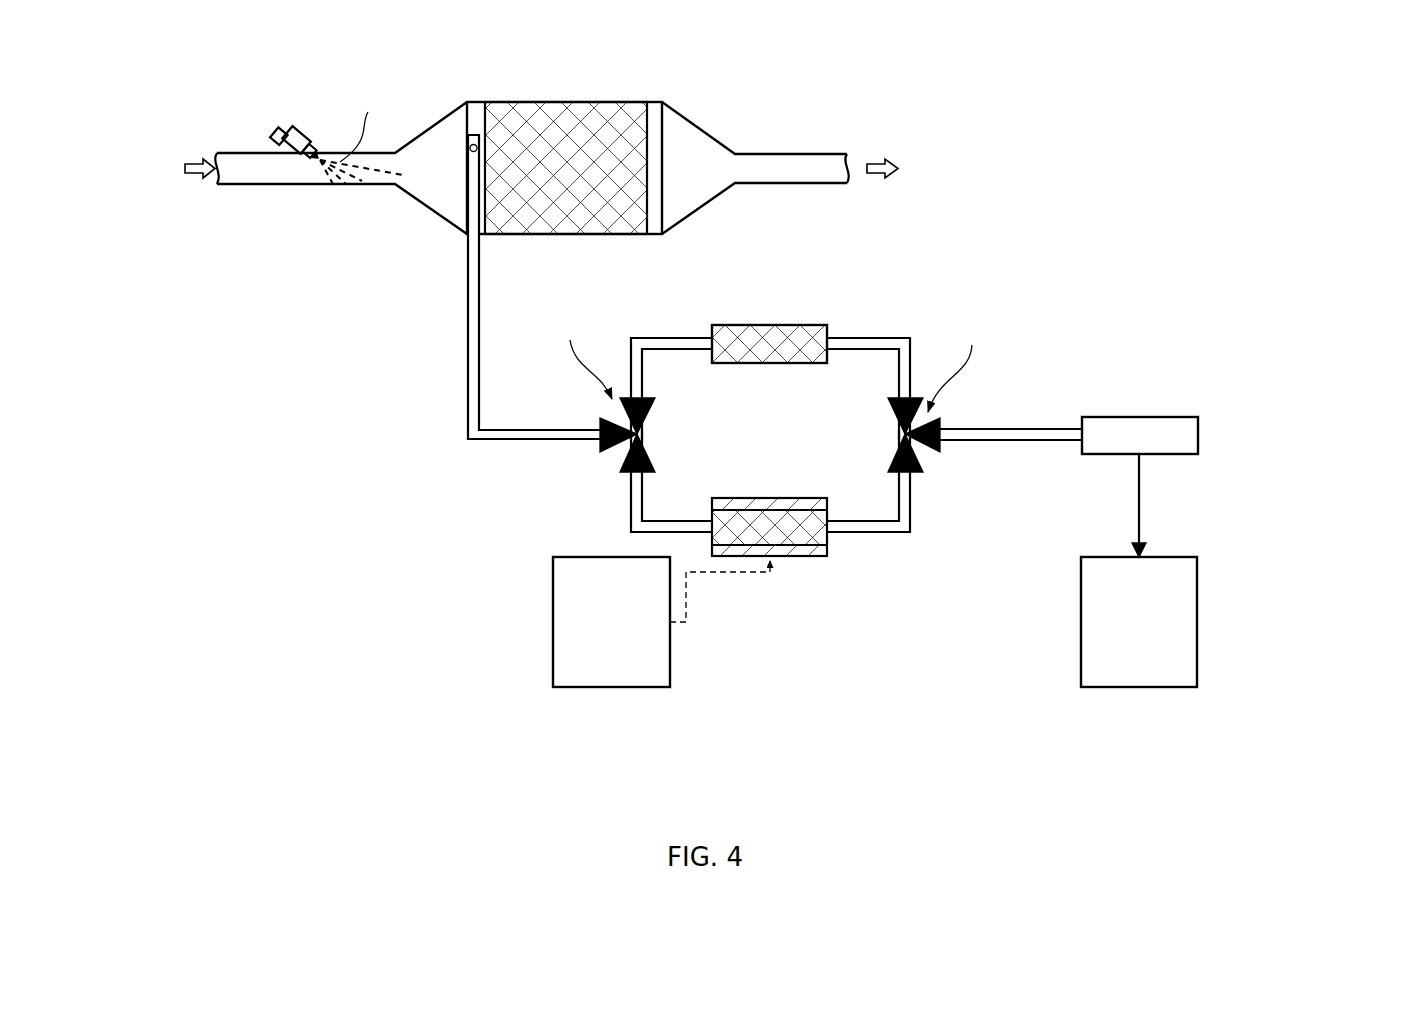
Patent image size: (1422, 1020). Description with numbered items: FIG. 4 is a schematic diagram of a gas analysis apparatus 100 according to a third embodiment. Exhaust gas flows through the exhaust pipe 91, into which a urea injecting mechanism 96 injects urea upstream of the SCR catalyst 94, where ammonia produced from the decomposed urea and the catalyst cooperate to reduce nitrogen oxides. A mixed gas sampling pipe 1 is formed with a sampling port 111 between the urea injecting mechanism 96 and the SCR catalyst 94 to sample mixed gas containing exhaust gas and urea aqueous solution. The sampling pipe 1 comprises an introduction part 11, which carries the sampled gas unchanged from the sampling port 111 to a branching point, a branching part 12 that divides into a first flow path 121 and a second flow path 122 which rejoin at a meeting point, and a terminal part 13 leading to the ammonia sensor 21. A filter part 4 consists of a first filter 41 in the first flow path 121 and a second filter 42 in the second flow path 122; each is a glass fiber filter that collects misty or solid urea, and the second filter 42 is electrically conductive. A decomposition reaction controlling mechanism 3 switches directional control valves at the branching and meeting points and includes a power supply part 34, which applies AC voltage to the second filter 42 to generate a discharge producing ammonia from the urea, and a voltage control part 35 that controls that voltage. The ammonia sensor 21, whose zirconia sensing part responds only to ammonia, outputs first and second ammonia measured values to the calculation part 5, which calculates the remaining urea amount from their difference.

The mixed gas sampling pipe 1 is at (867, 429).
The decomposition reaction controlling mechanism 3 is at (609, 678).
The filter part 4 is at (771, 440).
The calculation part 5 is at (1138, 687).
The introduction part 11 is at (474, 241).
The branching part 12 is at (770, 533).
The terminal part 13 is at (1045, 412).
The ammonia sensor 21 is at (1157, 417).
The power supply part 34 is at (743, 497).
The voltage control part 35 is at (610, 687).
The first filter 41 is at (809, 364).
The second filter 42 is at (818, 500).
The exhaust pipe 91 is at (436, 212).
The SCR catalyst 94 is at (565, 102).
The urea injecting mechanism 96 is at (293, 113).
The gas analysis apparatus 100 is at (552, 152).
The sampling port 111 is at (471, 145).
The first flow path 121 is at (683, 327).
The second flow path 122 is at (883, 508).